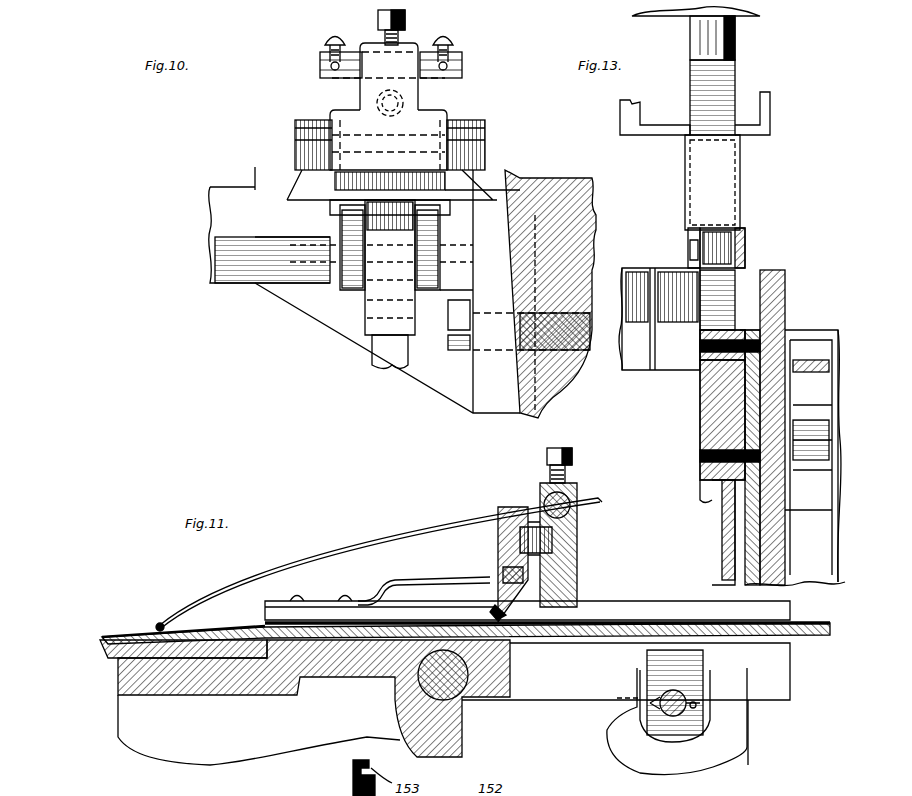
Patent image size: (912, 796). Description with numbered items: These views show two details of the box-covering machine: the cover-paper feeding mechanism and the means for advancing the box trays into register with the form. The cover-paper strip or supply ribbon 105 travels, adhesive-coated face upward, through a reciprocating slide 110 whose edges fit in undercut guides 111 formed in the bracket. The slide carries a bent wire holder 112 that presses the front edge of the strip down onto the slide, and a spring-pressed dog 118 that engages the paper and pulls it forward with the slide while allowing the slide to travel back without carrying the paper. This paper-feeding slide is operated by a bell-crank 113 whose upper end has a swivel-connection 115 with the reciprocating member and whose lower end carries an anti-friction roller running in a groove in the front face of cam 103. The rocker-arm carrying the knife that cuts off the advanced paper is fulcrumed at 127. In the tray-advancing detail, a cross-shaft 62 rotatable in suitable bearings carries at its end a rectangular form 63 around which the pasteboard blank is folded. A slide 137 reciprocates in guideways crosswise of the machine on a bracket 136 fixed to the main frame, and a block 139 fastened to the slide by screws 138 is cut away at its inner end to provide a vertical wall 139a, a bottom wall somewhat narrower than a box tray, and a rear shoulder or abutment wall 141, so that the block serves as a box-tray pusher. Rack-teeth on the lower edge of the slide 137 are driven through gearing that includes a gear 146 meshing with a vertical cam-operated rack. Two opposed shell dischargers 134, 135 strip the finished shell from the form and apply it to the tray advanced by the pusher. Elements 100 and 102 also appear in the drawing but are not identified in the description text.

In FIG. 13, the cross-shaft 62 is at (736, 33).
In FIG. 13, the rectangular form 63 is at (736, 72).
In FIG. 13, the pin 100 is at (690, 252).
In FIG. 13, the collar 102 is at (688, 240).
In FIG. 13, the cam 103 is at (625, 387).
In FIG. 10, the cover-paper strip 105 is at (455, 195).
In FIG. 11, the cover-paper strip 105 is at (653, 623).
In FIG. 10, the reciprocating slide 110 is at (462, 165).
In FIG. 11, the reciprocating slide 110 is at (620, 620).
In FIG. 10, the undercut guides 111 is at (278, 182).
In FIG. 11, the undercut guides 111 is at (707, 612).
In FIG. 10, the bent wire holder 112 is at (320, 70).
In FIG. 11, the bent wire holder 112 is at (165, 628).
In FIG. 10, the bell-crank 113 is at (392, 362).
In FIG. 11, the bell-crank 113 is at (713, 748).
In FIG. 10, the swivel-connection 115 is at (320, 290).
In FIG. 11, the swivel-connection 115 is at (713, 690).
In FIG. 10, the spring-pressed dog 118 is at (432, 150).
In FIG. 11, the spring-pressed dog 118 is at (492, 605).
In FIG. 11, the fulcrum 127 is at (470, 700).
In FIG. 13, the shell discharger 134 is at (750, 135).
In FIG. 13, the shell discharger 135 is at (655, 130).
In FIG. 13, the bracket 136 is at (785, 300).
In FIG. 13, the slide 137 is at (762, 400).
In FIG. 13, the screws 138 is at (700, 400).
In FIG. 13, the block 139 is at (700, 432).
In FIG. 13, the vertical wall 139a is at (746, 252).
In FIG. 13, the rear shoulder or abutment wall 141 is at (700, 320).
In FIG. 13, the gear 146 is at (795, 458).